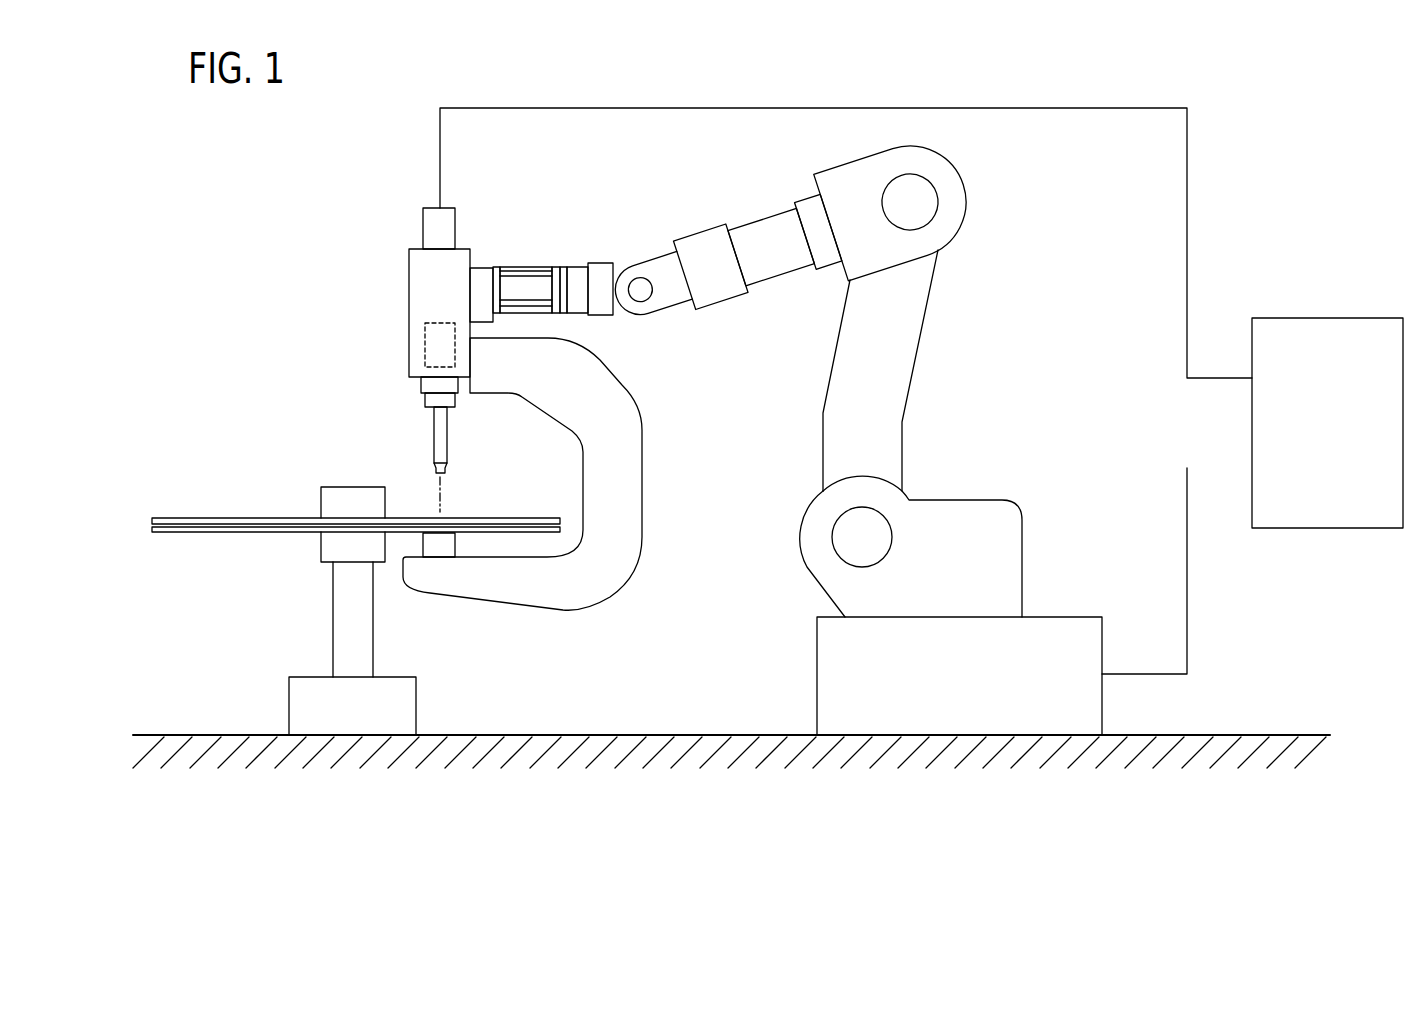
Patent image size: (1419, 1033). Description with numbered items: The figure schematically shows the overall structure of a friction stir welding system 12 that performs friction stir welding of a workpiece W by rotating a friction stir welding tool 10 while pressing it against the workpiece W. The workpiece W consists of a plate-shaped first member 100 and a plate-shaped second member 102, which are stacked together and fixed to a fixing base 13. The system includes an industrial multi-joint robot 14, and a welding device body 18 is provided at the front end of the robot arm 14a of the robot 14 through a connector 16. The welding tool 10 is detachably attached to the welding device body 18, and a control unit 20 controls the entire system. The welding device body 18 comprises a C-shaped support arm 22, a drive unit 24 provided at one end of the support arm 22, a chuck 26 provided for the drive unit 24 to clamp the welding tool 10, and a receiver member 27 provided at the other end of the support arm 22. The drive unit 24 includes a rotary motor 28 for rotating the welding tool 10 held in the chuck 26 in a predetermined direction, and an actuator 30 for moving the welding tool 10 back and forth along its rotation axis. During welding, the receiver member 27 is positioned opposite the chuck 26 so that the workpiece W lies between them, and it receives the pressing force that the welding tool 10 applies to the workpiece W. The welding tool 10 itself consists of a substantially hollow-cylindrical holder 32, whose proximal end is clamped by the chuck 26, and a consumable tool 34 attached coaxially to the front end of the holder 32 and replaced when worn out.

The friction stir welding system 12 is at (347, 115).
The friction stir welding tool 10 is at (378, 410).
The fixing base 13 is at (322, 485).
The industrial multi-joint robot 14 is at (952, 303).
The robot arm 14a is at (660, 265).
The connector 16 is at (520, 285).
The welding device body 18 is at (623, 380).
The control unit 20 is at (1349, 317).
The C-shaped support arm 22 is at (632, 473).
The drive unit 24 is at (417, 268).
The chuck 26 is at (427, 385).
The receiver member 27 is at (440, 545).
The rotary motor 28 is at (428, 223).
The actuator 30 is at (425, 333).
The holder 32 is at (438, 427).
The tool 34 is at (433, 470).
The first member 100 is at (212, 519).
The second member 102 is at (182, 532).
The workpiece W is at (267, 585).